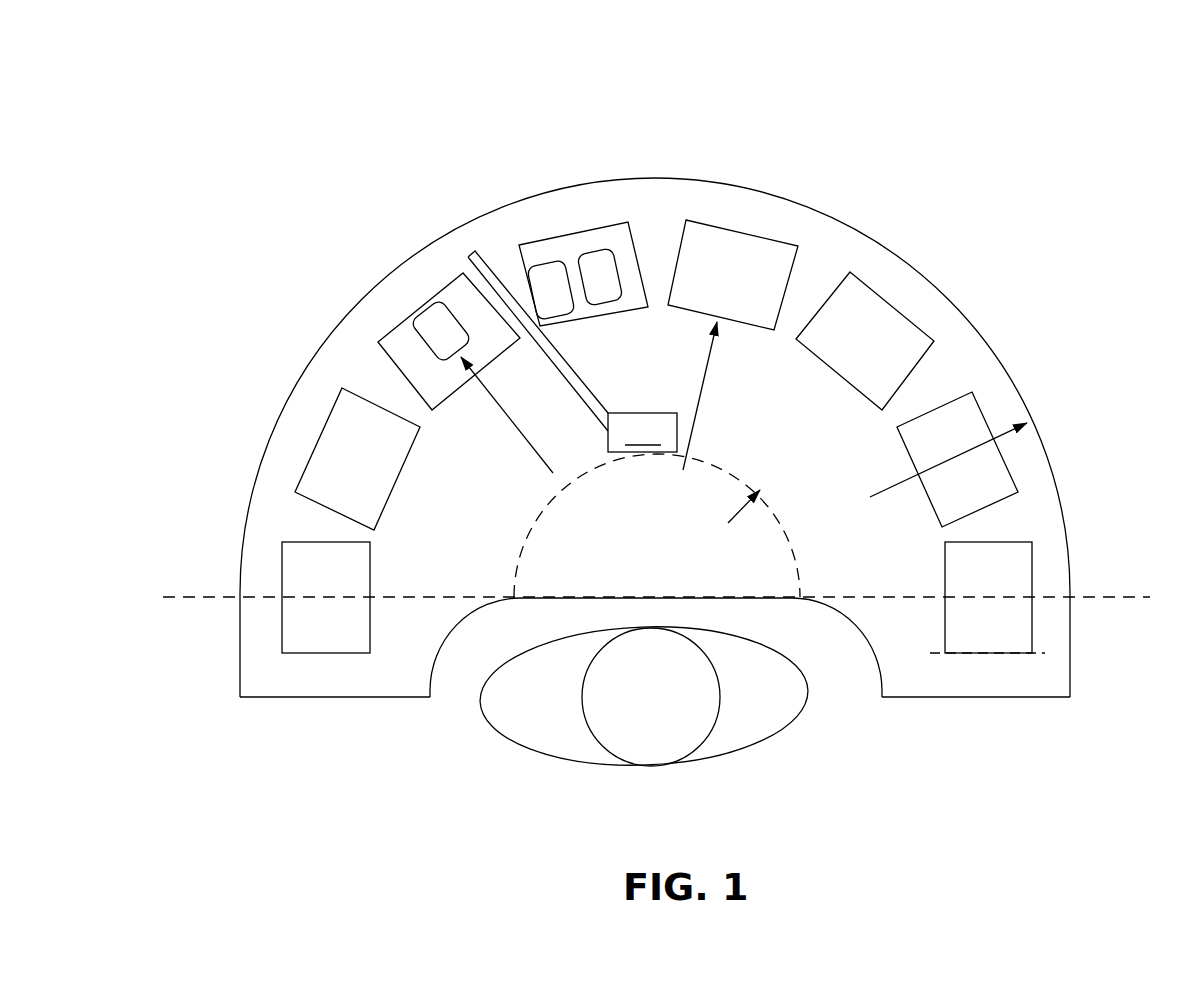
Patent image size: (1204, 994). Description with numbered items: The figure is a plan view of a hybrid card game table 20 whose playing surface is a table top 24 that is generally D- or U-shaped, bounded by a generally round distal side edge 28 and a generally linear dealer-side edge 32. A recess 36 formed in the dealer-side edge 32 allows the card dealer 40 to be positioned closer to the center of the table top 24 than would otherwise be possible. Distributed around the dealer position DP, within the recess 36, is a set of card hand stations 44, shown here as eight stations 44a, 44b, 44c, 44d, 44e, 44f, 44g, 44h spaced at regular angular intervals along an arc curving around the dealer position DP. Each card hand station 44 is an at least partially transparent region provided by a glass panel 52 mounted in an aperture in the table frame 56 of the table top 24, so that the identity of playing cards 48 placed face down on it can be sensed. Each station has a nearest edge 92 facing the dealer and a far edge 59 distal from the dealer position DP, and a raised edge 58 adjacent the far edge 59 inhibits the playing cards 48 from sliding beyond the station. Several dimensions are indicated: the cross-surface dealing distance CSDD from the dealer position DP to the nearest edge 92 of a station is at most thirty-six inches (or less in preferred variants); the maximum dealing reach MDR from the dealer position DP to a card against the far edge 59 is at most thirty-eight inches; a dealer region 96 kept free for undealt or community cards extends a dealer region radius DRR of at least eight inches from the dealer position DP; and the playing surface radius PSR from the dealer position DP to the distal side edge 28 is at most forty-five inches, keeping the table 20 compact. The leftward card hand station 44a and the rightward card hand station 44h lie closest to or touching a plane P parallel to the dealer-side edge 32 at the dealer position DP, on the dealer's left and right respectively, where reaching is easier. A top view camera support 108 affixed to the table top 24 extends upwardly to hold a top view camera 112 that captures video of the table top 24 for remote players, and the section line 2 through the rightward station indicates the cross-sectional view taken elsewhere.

The table 20 is at (307, 145).
The table top 24 is at (818, 213).
The distal side edge 28 is at (797, 197).
The dealer-side edge 32 is at (298, 703).
The recess 36 is at (827, 690).
The card dealer 40 is at (735, 733).
The card hand stations 44 is at (674, 373).
The leftward card hand station 44a is at (283, 593).
The card hand station 44b is at (322, 433).
The card hand station 44c is at (398, 322).
The card hand station 44d is at (557, 237).
The card hand station 44e is at (739, 233).
The card hand station 44f is at (923, 307).
The card hand station 44g is at (980, 403).
The rightward card hand station 44h is at (1033, 562).
The playing cards 48 is at (554, 272).
The glass panel 52 is at (295, 627).
The table frame 56 is at (922, 278).
The raised edge 58 is at (716, 232).
The far edge 59 is at (302, 467).
The nearest edge 92 is at (372, 635).
The dealer region 96 is at (553, 567).
The top view camera support 108 is at (490, 273).
The top view camera 112 is at (642, 432).
The section line 2- 2 is at (927, 650).
The plane P is at (1097, 598).
The dealer position DP is at (655, 601).
The maximum dealing reach MDR is at (653, 597).
The cross-surface dealing distance CSDD is at (658, 597).
The dealer region radius DRR is at (667, 595).
The playing surface radius PSR is at (668, 596).